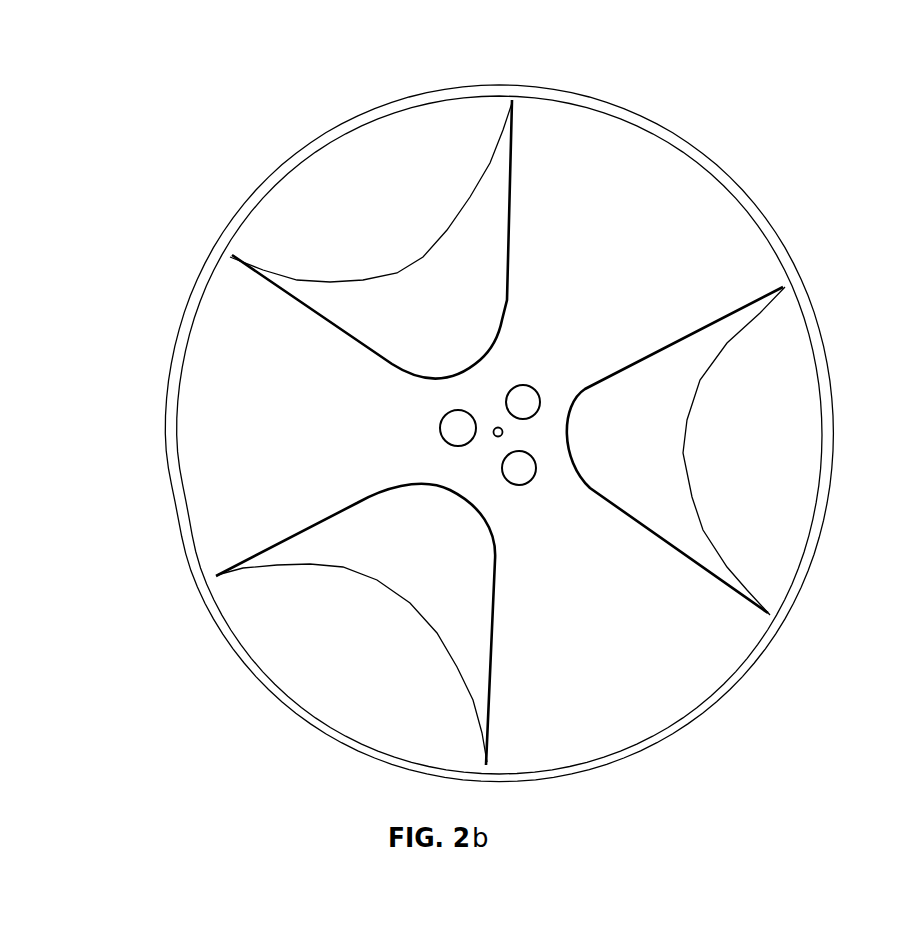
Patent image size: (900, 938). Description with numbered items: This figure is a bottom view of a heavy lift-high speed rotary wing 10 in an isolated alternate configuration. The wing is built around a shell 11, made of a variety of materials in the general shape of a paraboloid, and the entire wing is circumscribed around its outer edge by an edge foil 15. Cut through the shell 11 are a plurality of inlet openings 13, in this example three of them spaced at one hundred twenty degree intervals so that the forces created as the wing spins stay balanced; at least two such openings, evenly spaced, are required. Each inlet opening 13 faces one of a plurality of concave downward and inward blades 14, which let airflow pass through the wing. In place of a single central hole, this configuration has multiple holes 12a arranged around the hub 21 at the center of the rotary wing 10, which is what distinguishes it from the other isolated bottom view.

The heavy lift-high speed rotary wing 10 is at (222, 60).
The shell 11 is at (638, 178).
The holes 12a is at (537, 452).
The inlet openings 13 is at (414, 134).
The blades 14 is at (346, 295).
The edge foil 15 is at (232, 260).
The hub 21 is at (493, 444).